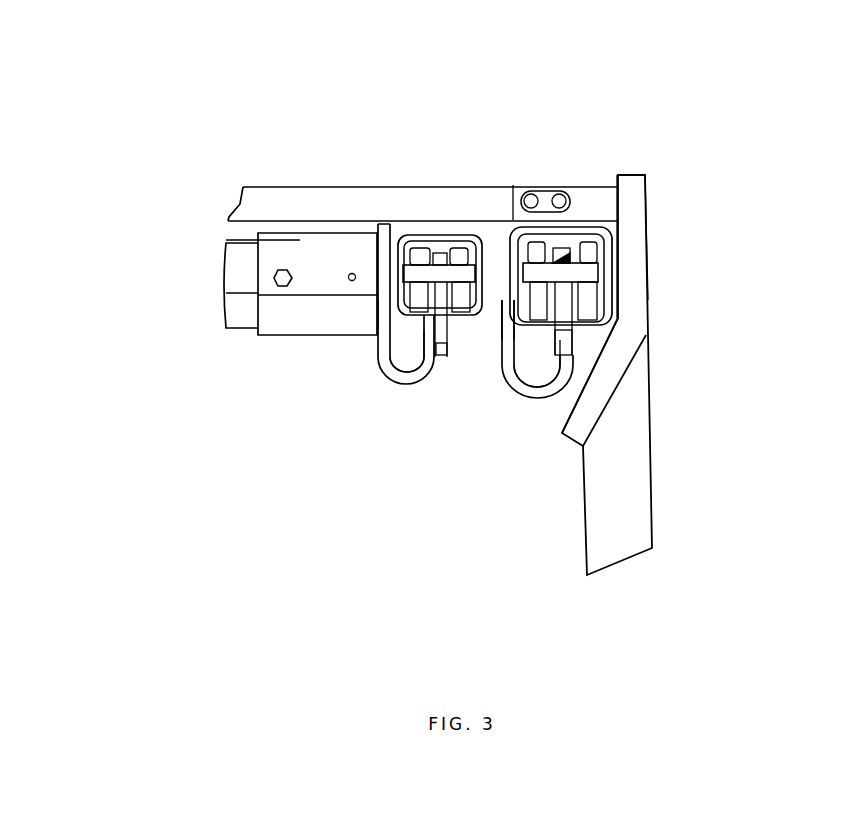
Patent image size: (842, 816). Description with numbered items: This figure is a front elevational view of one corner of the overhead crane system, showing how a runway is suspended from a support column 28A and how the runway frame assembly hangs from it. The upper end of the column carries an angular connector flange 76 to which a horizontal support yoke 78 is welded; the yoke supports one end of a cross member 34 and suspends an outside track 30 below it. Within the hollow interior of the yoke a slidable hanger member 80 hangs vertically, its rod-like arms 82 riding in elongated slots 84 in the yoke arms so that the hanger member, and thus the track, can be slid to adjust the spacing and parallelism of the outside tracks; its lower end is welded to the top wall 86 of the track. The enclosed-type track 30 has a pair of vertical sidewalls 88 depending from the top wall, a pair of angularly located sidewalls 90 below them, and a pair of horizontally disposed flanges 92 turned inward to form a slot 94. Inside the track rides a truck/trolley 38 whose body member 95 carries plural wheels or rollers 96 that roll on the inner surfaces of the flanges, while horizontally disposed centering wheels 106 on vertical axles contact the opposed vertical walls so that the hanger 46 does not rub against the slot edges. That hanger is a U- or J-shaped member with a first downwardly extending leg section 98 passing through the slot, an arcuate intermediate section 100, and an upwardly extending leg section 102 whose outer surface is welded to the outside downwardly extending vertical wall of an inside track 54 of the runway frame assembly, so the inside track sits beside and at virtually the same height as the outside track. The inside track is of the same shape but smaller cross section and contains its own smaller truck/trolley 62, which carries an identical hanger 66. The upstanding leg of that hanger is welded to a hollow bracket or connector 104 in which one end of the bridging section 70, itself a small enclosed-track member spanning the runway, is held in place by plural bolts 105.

The support column 28A is at (652, 492).
The outside track 30 is at (583, 270).
The cross member 34 is at (300, 186).
The truck/trolley 38 is at (540, 218).
The hanger 46 is at (546, 395).
The inside track 54 is at (430, 225).
The truck/trolley 62 is at (405, 232).
The hanger 66 is at (383, 370).
The bridging section 70 is at (223, 283).
The angular connector flange 76 is at (605, 385).
The horizontal support yoke 78 is at (605, 177).
The slidable hanger member 80 is at (462, 232).
The rod-like arms 82 is at (545, 195).
The elongated slot 84 is at (562, 250).
The top wall 86 is at (620, 177).
The vertical sidewalls 88 is at (485, 210).
The angularly located sidewalls 90 is at (512, 312).
The horizontally disposed flanges 92 is at (537, 332).
The slot 94 is at (446, 345).
The body member 95 is at (583, 247).
The wheels or rollers 96 is at (392, 365).
The first downwardly extending leg section 98 is at (430, 360).
The intermediate section 100 is at (410, 382).
The upwardly extending leg section 102 is at (377, 302).
The bracket or connector 104 is at (300, 258).
The bolts 105 is at (278, 280).
The idler or centering rollers or wheels 106 is at (605, 252).